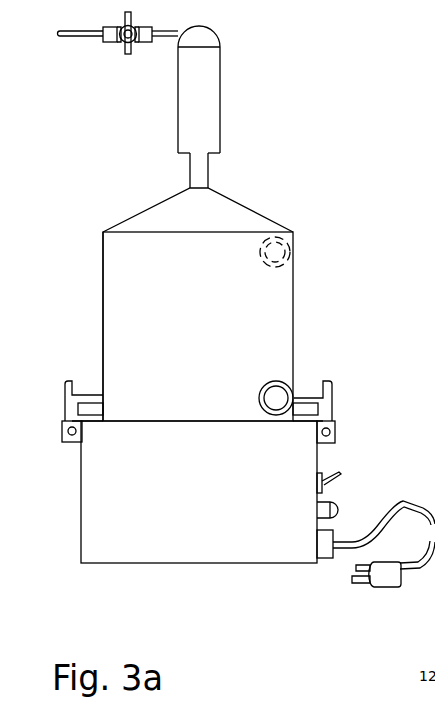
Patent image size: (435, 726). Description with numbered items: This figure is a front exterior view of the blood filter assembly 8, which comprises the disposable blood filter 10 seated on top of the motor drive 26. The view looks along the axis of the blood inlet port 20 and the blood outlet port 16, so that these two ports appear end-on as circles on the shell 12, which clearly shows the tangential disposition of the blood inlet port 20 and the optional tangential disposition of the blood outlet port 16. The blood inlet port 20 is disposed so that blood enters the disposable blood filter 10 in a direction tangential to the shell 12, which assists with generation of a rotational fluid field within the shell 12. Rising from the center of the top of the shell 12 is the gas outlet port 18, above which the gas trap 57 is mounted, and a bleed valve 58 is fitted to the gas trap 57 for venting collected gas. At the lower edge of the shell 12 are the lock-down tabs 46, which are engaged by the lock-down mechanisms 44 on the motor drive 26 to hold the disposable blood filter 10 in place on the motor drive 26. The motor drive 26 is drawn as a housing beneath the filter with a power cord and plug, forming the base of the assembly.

The blood filter assembly 8 is at (300, 170).
The disposable blood filter 10 is at (123, 267).
The shell 12 is at (103, 317).
The blood outlet port 16 is at (293, 232).
The gas outlet port 18 is at (208, 178).
The blood inlet port 20 is at (283, 382).
The motor drive 26 is at (248, 504).
The lock-down mechanisms 44 is at (328, 400).
The lock-down tabs 46 is at (93, 410).
The gas trap 57 is at (220, 75).
The bleed valve 58 is at (120, 40).